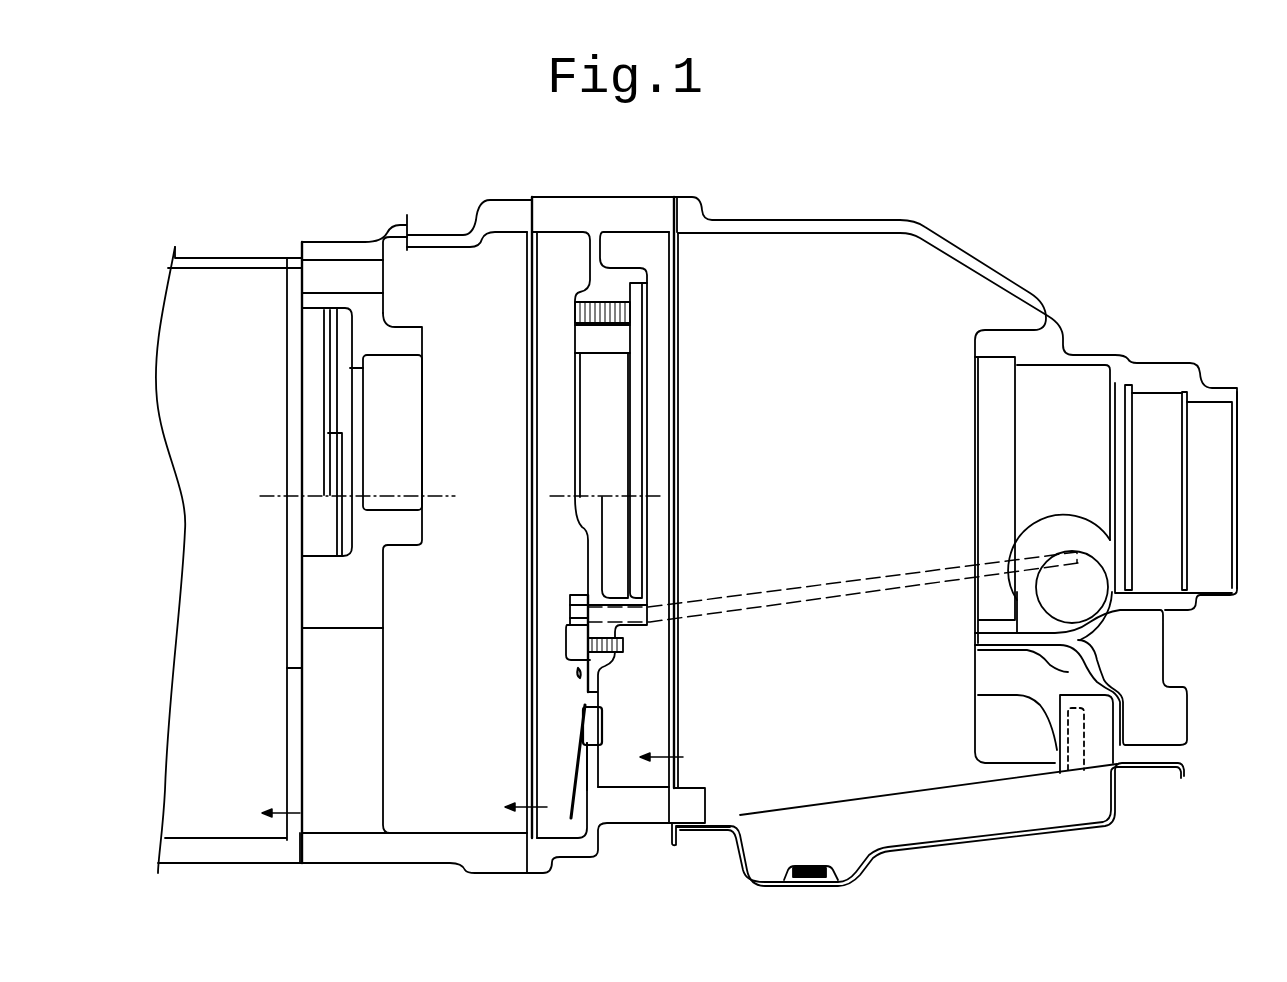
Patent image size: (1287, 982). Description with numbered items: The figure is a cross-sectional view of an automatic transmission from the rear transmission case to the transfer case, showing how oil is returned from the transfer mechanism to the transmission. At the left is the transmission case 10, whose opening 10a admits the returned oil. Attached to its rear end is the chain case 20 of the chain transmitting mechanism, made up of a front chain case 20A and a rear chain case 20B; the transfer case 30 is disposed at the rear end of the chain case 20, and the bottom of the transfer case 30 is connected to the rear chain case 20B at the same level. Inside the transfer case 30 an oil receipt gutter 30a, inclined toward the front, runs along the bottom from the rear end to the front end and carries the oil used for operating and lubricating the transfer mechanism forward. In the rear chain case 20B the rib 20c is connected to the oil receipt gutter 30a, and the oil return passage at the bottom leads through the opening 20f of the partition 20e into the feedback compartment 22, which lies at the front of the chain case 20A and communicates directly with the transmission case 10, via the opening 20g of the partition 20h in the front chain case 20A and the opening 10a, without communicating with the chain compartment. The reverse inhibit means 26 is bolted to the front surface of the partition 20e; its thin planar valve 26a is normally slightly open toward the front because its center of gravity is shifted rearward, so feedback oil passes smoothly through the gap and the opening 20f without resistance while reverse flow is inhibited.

The transmission case 10 is at (255, 252).
The opening of the transmission case 10a is at (287, 734).
The chain case 20 is at (560, 193).
The front chain case 20A is at (498, 205).
The rear chain case 20B is at (642, 203).
The rib 20c is at (655, 607).
The partition 20e is at (582, 538).
The opening 20f is at (593, 767).
The opening 20g is at (365, 733).
The partition 20h is at (372, 583).
The feedback compartment 22 is at (465, 771).
The reverse inhibit means 26 is at (573, 717).
The valve 26a is at (568, 792).
The transfer case 30 is at (828, 225).
The oil receipt gutter 30a is at (798, 587).